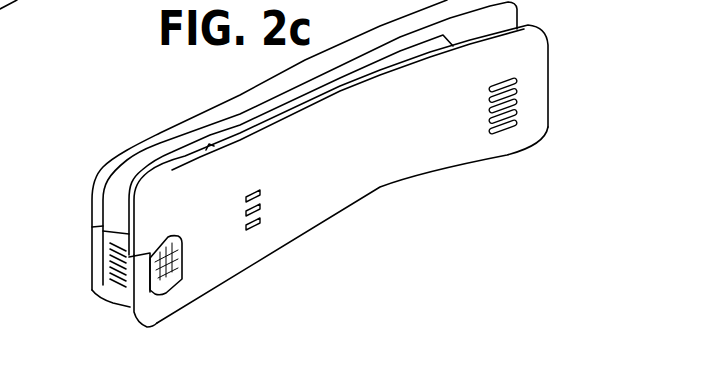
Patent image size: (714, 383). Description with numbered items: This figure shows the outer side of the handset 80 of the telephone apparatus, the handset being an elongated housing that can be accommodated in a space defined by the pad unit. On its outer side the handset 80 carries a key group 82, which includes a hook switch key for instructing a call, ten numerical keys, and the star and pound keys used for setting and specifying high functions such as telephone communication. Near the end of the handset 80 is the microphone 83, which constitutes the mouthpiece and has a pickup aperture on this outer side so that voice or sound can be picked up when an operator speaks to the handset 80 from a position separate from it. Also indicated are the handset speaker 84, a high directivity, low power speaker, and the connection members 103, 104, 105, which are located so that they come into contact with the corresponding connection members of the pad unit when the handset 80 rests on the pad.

The handset 80 is at (157, 131).
The key group 82 is at (40, 19).
The microphone 83 is at (112, 281).
The handset speaker 84 is at (503, 130).
The connection member 103 is at (261, 221).
The connection member 104 is at (261, 207).
The connection member 105 is at (261, 193).